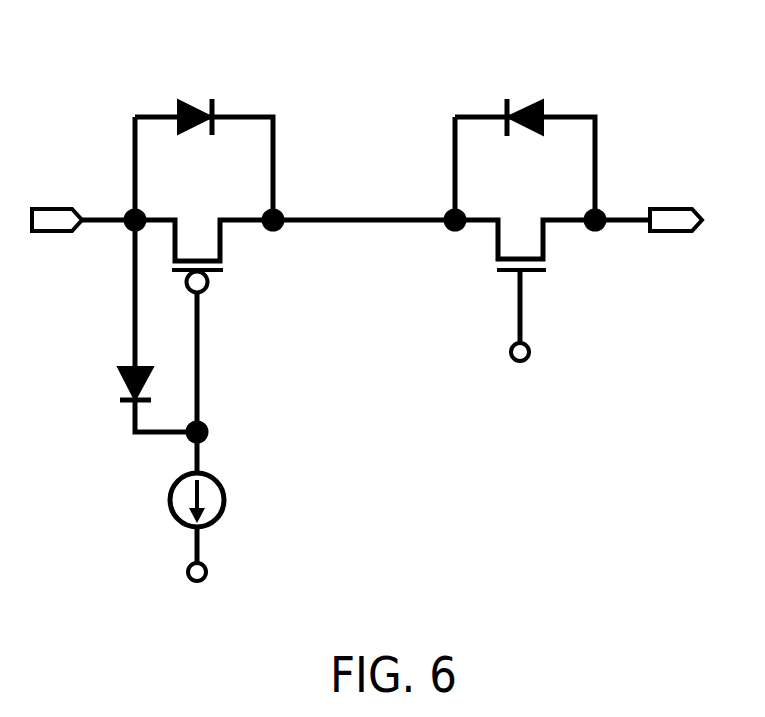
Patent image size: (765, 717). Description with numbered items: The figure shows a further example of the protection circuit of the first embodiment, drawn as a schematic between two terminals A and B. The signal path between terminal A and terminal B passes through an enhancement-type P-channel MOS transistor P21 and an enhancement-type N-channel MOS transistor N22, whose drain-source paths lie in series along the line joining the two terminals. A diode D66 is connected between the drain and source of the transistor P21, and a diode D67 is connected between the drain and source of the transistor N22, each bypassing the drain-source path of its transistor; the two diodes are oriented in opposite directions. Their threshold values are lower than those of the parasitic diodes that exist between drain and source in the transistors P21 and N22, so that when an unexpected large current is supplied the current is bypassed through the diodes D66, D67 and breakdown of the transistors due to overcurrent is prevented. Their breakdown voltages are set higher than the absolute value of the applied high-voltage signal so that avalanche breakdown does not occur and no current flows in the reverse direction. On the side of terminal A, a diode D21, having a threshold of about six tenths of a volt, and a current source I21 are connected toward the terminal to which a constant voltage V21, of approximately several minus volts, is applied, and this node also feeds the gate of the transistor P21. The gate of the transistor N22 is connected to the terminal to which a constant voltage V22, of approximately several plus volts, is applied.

The terminal A is at (50, 208).
The terminal B is at (673, 208).
The diode D66 is at (180, 100).
The diode D67 is at (523, 102).
The enhancement-type P-channel MOS transistor P21 is at (232, 282).
The enhancement-type N-channel MOS transistor N22 is at (493, 280).
The constant voltage V22 is at (532, 347).
The diode D21 is at (125, 385).
The current source I21 is at (170, 508).
The constant voltage V21 is at (188, 573).